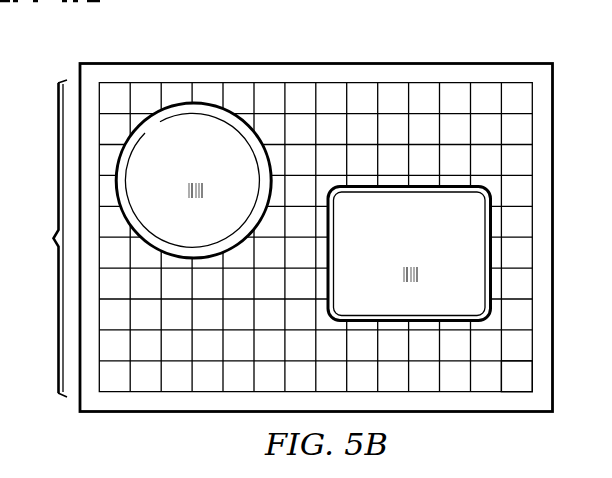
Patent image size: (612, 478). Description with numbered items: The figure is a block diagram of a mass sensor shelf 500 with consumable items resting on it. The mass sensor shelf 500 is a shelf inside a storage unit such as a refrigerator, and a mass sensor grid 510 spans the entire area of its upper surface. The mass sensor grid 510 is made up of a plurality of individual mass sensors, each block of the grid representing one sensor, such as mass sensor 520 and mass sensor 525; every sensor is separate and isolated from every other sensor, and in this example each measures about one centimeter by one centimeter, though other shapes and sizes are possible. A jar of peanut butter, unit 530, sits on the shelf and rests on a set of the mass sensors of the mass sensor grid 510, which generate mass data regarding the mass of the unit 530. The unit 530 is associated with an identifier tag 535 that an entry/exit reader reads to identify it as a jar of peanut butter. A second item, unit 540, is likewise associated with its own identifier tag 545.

The mass sensor shelf 500 is at (368, 63).
The mass sensor grid 510 is at (38, 238).
The mass sensor 520 is at (147, 347).
The mass sensor 525 is at (518, 380).
The unit 530 is at (172, 155).
The identifier tag 535 is at (188, 190).
The unit 540 is at (427, 238).
The identifier tag 545 is at (403, 272).